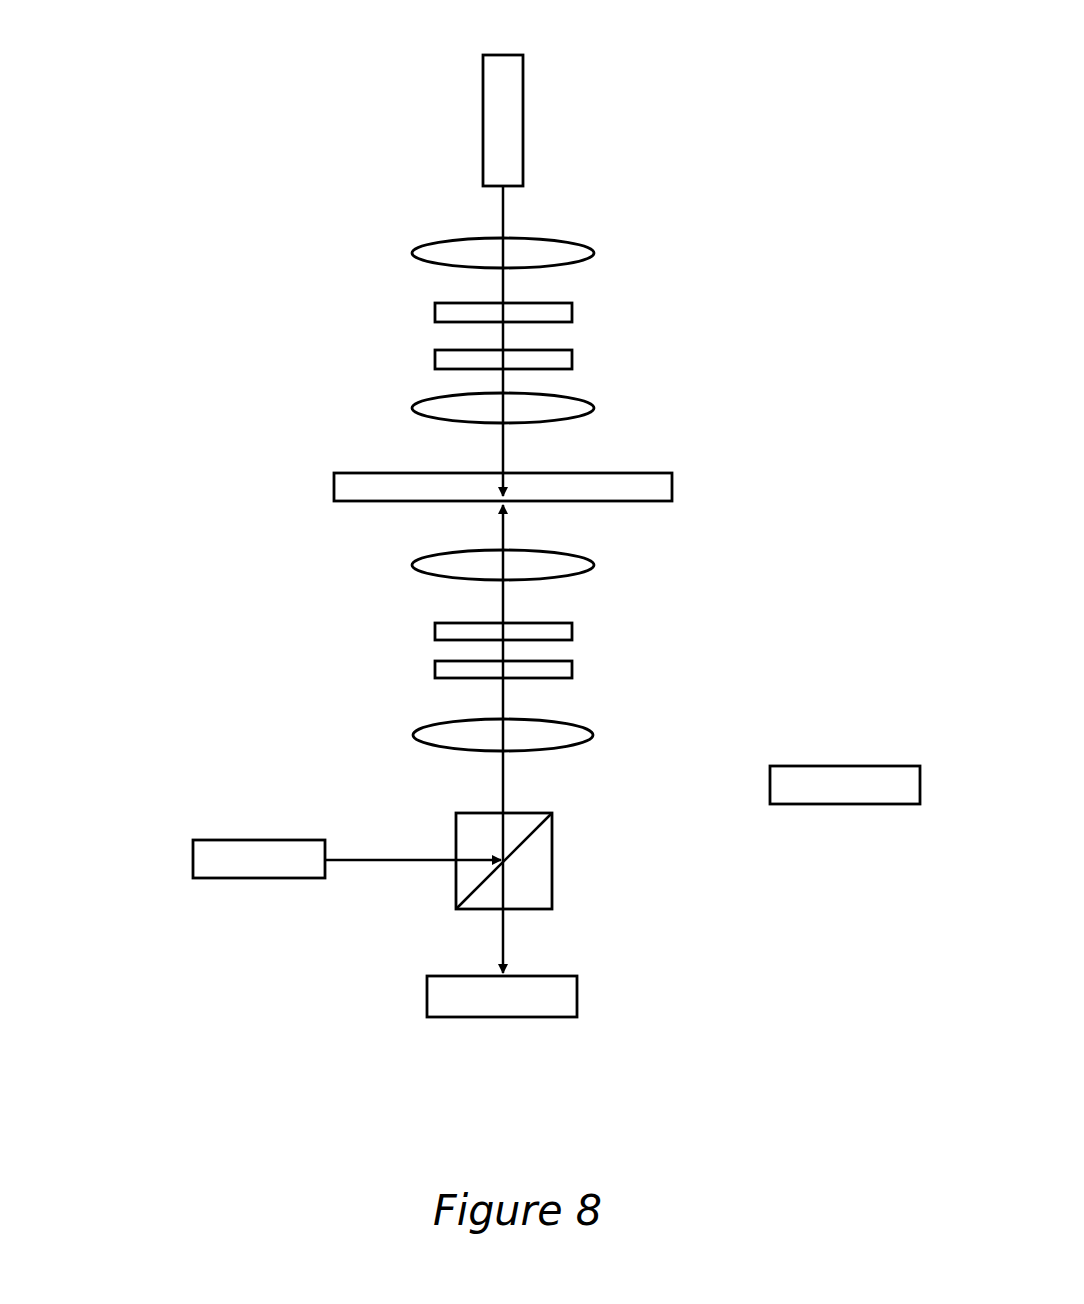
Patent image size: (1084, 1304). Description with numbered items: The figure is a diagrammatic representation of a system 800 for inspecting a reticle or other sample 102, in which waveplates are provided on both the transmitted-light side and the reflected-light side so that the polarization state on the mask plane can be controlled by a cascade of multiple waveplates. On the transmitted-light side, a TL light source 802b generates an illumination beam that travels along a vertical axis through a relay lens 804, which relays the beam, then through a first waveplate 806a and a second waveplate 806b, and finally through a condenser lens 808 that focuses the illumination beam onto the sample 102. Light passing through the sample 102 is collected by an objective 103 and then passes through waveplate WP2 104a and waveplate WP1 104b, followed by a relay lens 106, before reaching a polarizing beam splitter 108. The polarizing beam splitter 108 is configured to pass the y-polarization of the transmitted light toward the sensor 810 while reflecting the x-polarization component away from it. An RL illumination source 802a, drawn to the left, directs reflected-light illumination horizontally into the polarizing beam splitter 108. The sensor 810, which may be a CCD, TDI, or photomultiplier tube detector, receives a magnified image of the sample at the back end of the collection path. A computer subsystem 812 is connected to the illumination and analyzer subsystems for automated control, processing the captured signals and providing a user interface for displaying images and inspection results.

The system 800 is at (753, 57).
The TL light source 802b is at (483, 143).
The relay lens 804 is at (416, 255).
The first waveplate 806a is at (437, 313).
The second waveplate 806b is at (437, 358).
The condenser lens 808 is at (432, 410).
The sample 102 is at (334, 481).
The objective 103 is at (413, 563).
The waveplate WP2 104a is at (437, 628).
The waveplate WP1 104b is at (437, 672).
The relay lens 106 is at (413, 737).
The computer subsystem 812 is at (770, 781).
The RL illumination source 802a is at (193, 858).
The polarizing beam splitter 108 is at (552, 846).
The sensor 810 is at (427, 993).